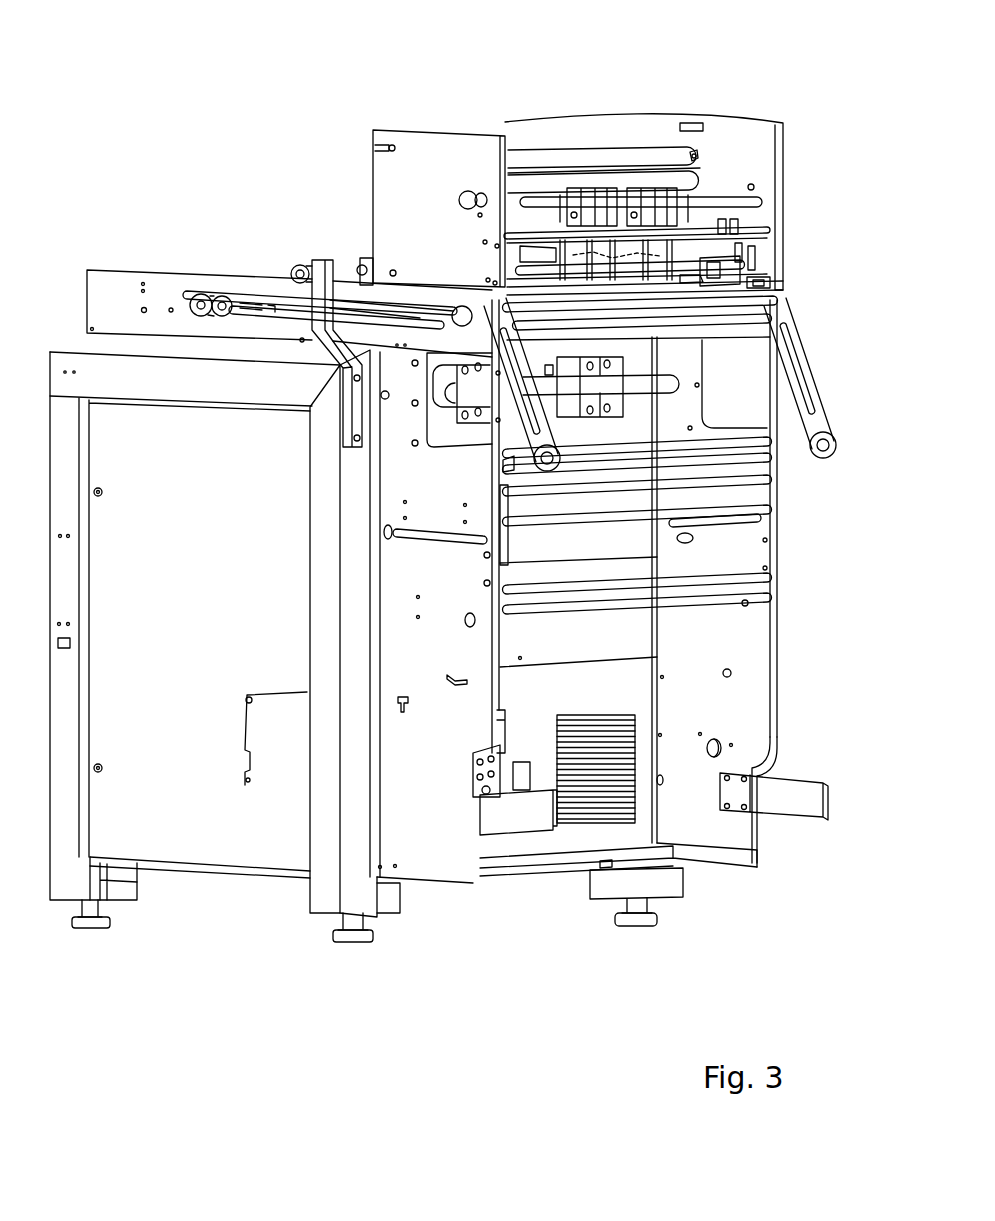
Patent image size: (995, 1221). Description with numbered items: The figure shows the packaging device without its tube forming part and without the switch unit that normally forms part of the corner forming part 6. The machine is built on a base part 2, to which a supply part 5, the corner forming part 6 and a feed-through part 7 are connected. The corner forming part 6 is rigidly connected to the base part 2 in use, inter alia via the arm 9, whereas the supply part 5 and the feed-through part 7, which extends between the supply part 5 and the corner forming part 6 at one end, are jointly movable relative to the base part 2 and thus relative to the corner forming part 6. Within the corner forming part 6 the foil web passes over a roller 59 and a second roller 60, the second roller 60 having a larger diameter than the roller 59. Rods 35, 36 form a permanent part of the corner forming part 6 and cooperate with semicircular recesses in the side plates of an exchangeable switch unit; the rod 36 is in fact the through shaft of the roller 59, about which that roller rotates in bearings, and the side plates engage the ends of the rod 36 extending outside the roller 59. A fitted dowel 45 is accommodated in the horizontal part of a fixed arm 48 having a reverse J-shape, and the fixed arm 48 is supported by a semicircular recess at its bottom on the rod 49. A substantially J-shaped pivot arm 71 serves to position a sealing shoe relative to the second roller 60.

The base part 2 is at (199, 573).
The supply part 5 is at (523, 942).
The corner forming part 6 is at (733, 82).
The feed-through part 7 is at (140, 247).
The arm 9 is at (346, 262).
The rod 35 is at (724, 197).
The rod 36 is at (699, 153).
The fitted dowel 45 is at (705, 212).
The fixed arm 48 is at (680, 264).
The rod 49 is at (697, 273).
The roller 59 is at (578, 159).
The second roller 60 is at (622, 180).
The pivot arm 71 is at (555, 220).